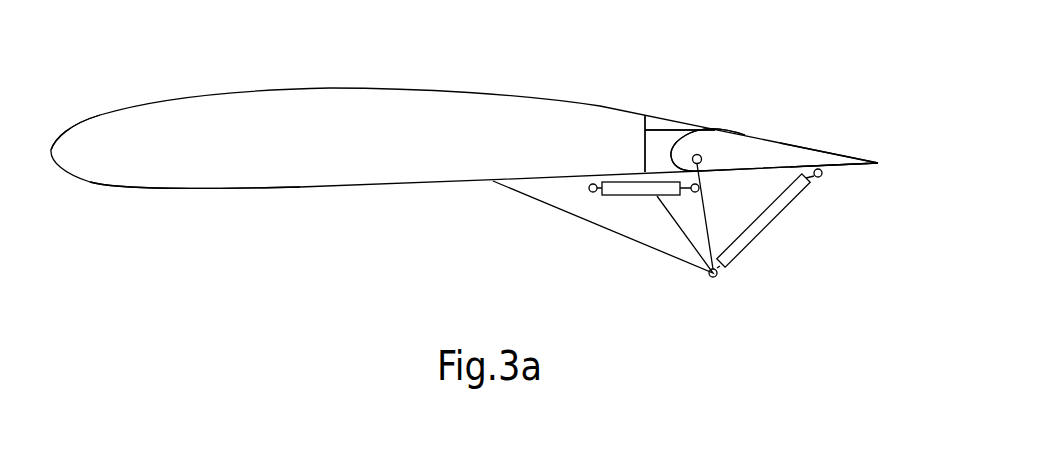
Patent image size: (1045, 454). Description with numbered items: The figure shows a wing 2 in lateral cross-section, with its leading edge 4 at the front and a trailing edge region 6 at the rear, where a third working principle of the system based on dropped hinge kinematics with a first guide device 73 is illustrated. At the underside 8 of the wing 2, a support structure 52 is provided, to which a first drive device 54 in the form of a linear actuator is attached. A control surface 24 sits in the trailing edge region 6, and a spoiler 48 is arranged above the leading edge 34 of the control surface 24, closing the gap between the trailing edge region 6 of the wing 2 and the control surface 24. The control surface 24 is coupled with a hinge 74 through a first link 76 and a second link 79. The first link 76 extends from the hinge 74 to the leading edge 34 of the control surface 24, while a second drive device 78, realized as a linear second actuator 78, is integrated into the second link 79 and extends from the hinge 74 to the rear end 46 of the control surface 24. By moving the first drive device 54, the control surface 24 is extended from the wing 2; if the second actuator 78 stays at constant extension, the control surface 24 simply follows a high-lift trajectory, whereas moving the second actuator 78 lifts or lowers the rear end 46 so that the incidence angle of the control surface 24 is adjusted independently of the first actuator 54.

The wing 2 is at (347, 100).
The leading edge 4 is at (47, 146).
The trailing edge region 6 is at (620, 84).
The underside 8 is at (345, 192).
The control surface 24 is at (752, 150).
The leading edge of the control surface 34 is at (692, 147).
The rear end of the control surface 46 is at (848, 124).
The spoiler 48 is at (672, 118).
The support structure 52 is at (553, 198).
The first drive device 54 is at (625, 183).
The first guide device 73 is at (644, 262).
The hinge 74 is at (717, 278).
The first link 76 is at (706, 210).
The second drive device 78 is at (770, 232).
The second link 79 is at (810, 274).